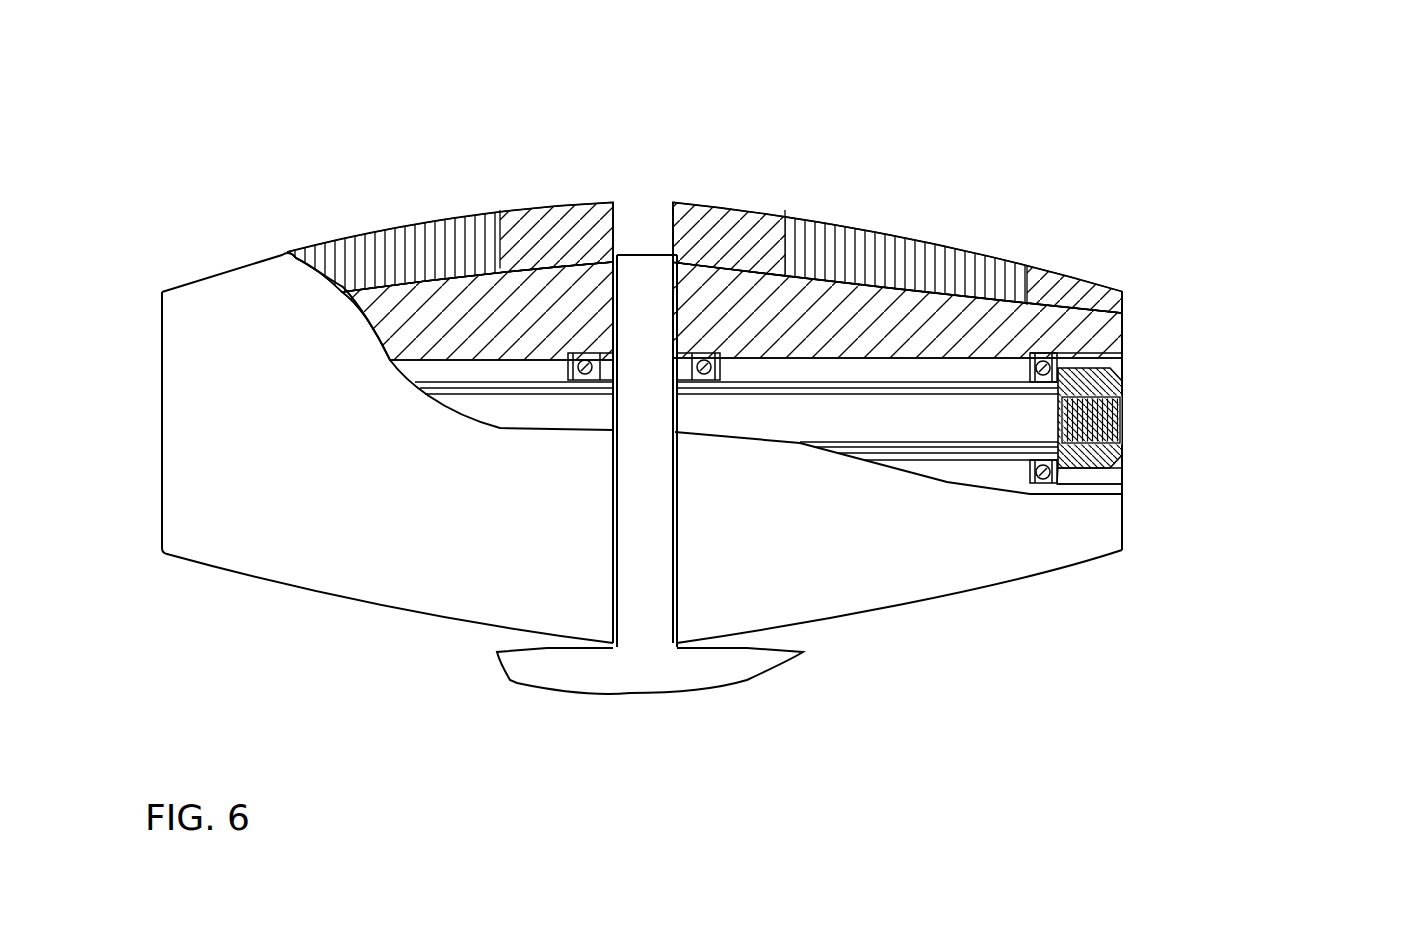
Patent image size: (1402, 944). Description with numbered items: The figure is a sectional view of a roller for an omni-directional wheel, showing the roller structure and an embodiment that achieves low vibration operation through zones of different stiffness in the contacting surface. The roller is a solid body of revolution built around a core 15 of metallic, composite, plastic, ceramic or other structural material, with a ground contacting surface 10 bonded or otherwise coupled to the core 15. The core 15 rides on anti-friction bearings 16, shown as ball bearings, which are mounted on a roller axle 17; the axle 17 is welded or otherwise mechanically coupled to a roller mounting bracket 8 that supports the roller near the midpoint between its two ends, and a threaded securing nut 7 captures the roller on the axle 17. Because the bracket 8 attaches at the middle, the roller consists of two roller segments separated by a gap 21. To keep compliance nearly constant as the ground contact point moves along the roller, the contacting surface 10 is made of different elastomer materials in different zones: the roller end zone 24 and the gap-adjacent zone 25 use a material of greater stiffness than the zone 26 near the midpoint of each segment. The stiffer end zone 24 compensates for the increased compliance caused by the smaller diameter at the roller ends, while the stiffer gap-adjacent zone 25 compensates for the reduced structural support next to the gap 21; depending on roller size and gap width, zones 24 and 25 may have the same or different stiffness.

The threaded securing nut 7 is at (1093, 468).
The roller mounting bracket 8 is at (647, 525).
The ground contacting surface 10 is at (1135, 307).
The core 15 is at (1135, 342).
The anti-friction bearings 16 is at (584, 368).
The roller axle 17 is at (1127, 427).
The gap 21 is at (650, 212).
The roller end zone 24 is at (1072, 297).
The gap-adjacent zone 25 is at (712, 212).
The midpoint zone 26 is at (860, 252).